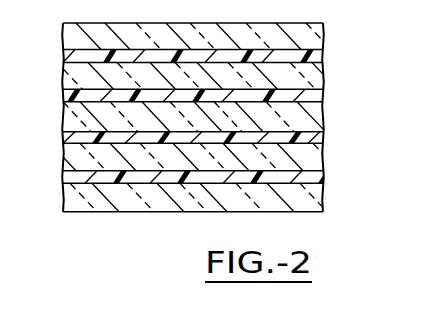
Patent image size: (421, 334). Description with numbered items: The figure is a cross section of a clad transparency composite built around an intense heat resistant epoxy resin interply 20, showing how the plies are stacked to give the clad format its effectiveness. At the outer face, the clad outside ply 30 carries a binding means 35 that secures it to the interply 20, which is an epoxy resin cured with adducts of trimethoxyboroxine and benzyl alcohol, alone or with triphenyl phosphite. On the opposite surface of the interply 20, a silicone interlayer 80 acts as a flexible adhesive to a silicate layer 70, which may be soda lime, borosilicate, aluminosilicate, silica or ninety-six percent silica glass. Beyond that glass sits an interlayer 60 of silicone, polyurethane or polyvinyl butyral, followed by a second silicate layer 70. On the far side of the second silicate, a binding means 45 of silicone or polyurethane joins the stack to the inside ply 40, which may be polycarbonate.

The inside ply 40 is at (63, 33).
The binding means 45 is at (63, 55).
The silicate layer 70 is at (63, 78).
The interlayer 60 is at (63, 98).
The silicone interlayer 80 is at (63, 145).
The intense heat resistant resin interply 20 is at (63, 168).
The binding means 35 is at (63, 185).
The clad outside ply 30 is at (63, 209).